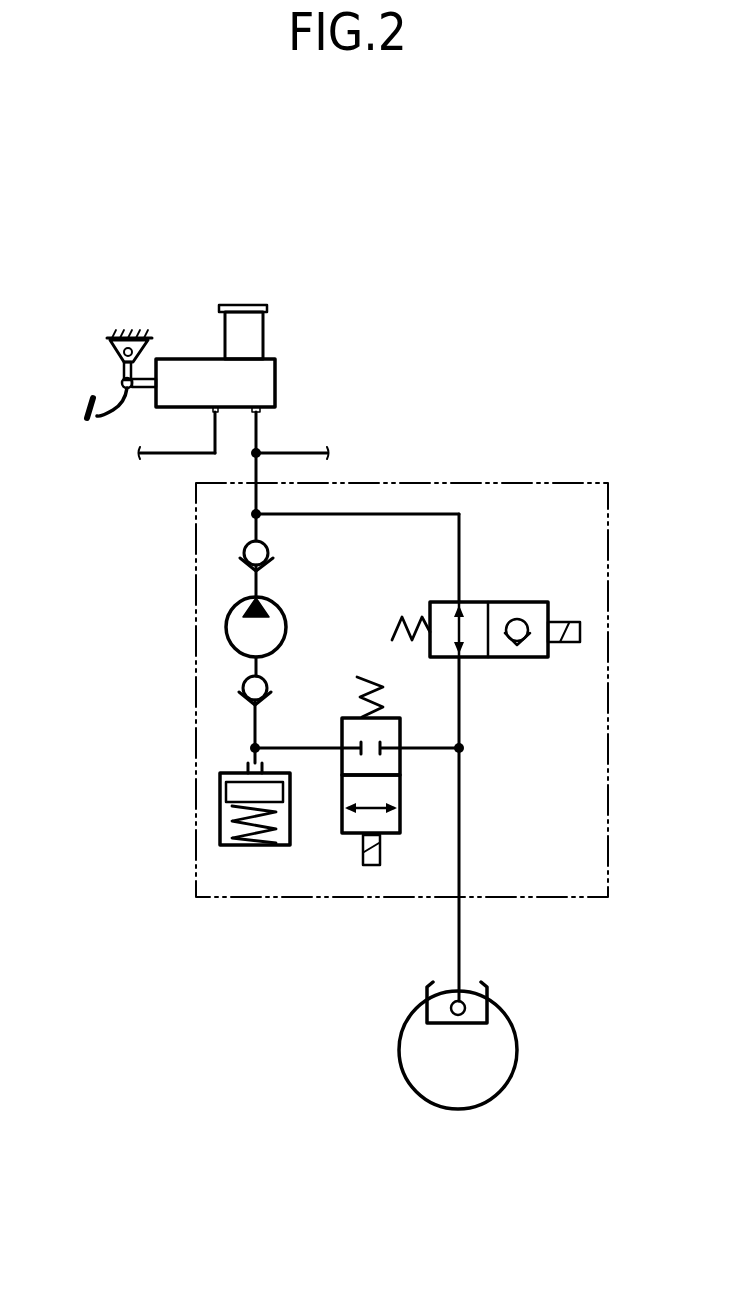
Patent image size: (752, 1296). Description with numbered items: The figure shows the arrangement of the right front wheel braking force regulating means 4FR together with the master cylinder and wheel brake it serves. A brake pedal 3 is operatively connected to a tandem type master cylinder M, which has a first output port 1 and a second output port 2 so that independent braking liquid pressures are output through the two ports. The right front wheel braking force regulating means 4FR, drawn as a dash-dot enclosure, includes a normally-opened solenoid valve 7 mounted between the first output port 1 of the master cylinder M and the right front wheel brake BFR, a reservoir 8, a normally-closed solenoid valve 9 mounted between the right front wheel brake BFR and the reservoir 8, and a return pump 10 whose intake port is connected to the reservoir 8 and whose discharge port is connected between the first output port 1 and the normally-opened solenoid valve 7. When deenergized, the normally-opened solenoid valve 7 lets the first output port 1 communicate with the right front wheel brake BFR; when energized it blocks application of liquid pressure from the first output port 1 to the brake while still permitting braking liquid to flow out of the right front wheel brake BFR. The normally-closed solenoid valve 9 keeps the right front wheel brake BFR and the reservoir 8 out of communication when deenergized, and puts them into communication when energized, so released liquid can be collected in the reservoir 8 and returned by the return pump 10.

The tandem type master cylinder M is at (265, 376).
The first output port 1 is at (260, 412).
The second output port 2 is at (212, 411).
The brake pedal 3 is at (86, 407).
The right front wheel braking force regulating means 4FR is at (447, 484).
The normally-opened solenoid valve 7 is at (528, 658).
The reservoir 8 is at (219, 812).
The normally-closed solenoid valve 9 is at (341, 732).
The return pump 10 is at (273, 630).
The right front wheel brake BFR is at (480, 990).